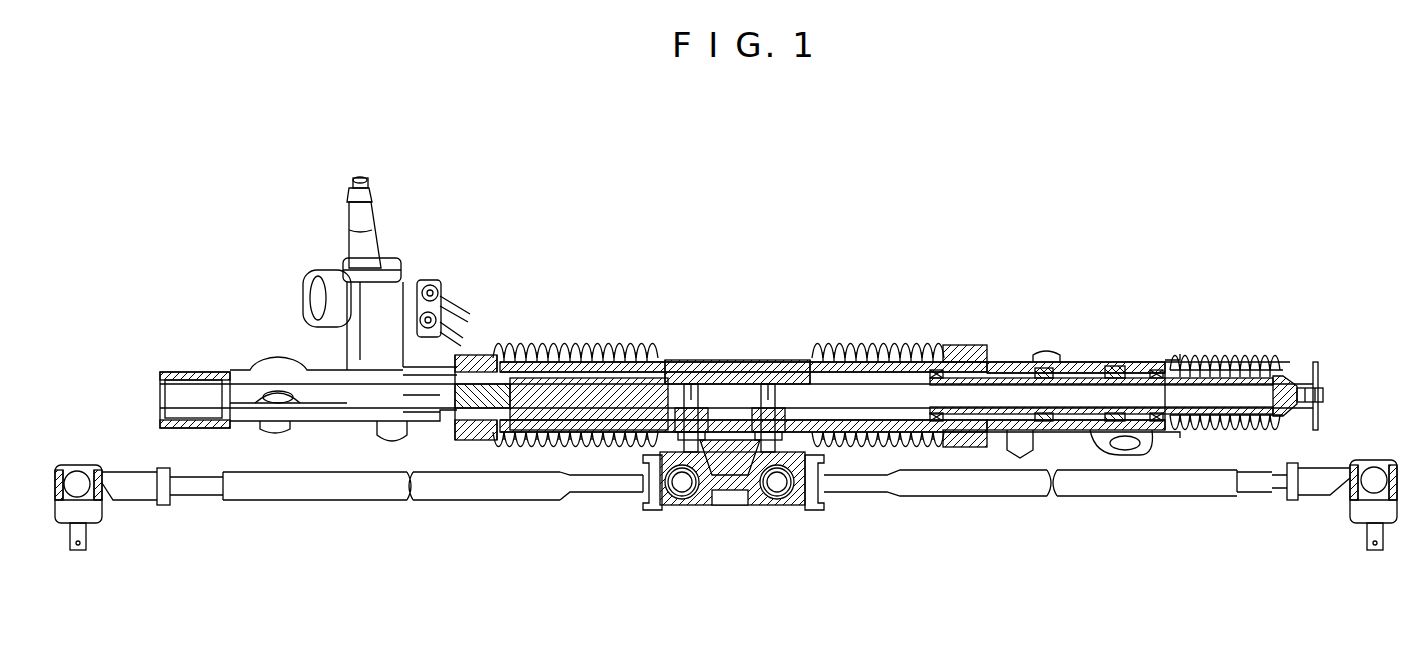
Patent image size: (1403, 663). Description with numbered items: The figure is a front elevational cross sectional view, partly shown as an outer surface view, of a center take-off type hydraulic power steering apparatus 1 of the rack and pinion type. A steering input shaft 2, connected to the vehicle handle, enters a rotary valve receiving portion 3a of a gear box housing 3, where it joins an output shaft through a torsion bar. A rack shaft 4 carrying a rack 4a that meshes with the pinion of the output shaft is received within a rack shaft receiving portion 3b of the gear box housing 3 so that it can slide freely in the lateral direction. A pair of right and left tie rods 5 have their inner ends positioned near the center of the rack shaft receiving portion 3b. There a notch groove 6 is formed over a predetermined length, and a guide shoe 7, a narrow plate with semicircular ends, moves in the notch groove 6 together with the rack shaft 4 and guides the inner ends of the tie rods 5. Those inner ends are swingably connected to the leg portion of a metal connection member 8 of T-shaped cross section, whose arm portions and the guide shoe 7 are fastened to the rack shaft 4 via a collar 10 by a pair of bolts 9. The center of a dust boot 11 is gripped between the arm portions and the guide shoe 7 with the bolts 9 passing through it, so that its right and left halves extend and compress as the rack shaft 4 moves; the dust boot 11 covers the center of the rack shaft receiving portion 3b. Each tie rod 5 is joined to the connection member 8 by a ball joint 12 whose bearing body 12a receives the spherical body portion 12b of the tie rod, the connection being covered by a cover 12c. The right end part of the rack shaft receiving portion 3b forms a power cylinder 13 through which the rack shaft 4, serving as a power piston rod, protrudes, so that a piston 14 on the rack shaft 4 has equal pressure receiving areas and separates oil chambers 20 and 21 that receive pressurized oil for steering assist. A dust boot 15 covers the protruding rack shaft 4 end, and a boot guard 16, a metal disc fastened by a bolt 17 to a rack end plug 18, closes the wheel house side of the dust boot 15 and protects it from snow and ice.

The center take-off type hydraulic power steering apparatus 1 is at (895, 264).
The steering input shaft 2 is at (385, 222).
The gear box housing 3 is at (329, 357).
The rotary valve receiving portion 3a is at (361, 314).
The rack shaft receiving portion 3b is at (743, 330).
The rack shaft 4 is at (575, 361).
The rack 4a is at (476, 460).
The tie rod 5 is at (726, 513).
The notch groove 6 is at (736, 472).
The guide shoe 7 is at (737, 329).
The connection member 8 is at (730, 503).
The bolt 9 is at (723, 363).
The collar 10 is at (720, 357).
The dust boot 11 is at (878, 361).
The ball joint 12 is at (737, 539).
The bearing body 12a is at (734, 534).
The spherical body portion 12b is at (736, 547).
The cover 12c is at (722, 525).
The power cylinder 13 is at (1101, 366).
The piston 14 is at (1039, 348).
The dust boot 15 is at (1224, 356).
The boot guard 16 is at (1328, 361).
The bolt 17 is at (1340, 400).
The rack end plug 18 is at (1271, 345).
The oil chamber 20 is at (968, 361).
The oil chamber 21 is at (1129, 348).